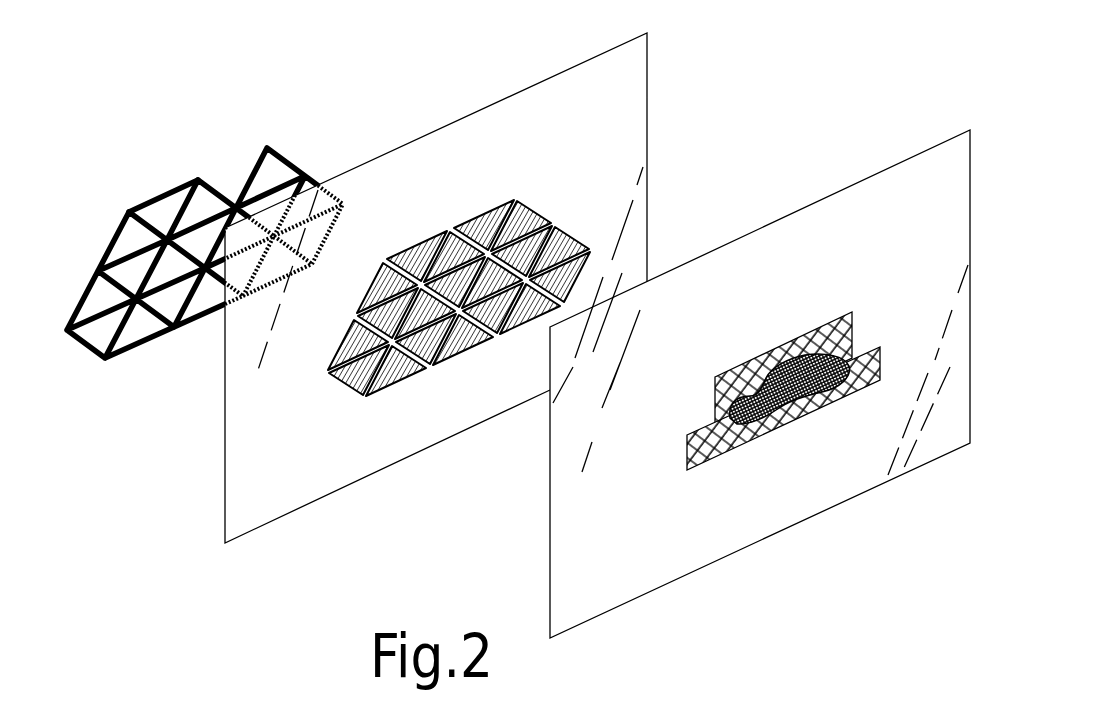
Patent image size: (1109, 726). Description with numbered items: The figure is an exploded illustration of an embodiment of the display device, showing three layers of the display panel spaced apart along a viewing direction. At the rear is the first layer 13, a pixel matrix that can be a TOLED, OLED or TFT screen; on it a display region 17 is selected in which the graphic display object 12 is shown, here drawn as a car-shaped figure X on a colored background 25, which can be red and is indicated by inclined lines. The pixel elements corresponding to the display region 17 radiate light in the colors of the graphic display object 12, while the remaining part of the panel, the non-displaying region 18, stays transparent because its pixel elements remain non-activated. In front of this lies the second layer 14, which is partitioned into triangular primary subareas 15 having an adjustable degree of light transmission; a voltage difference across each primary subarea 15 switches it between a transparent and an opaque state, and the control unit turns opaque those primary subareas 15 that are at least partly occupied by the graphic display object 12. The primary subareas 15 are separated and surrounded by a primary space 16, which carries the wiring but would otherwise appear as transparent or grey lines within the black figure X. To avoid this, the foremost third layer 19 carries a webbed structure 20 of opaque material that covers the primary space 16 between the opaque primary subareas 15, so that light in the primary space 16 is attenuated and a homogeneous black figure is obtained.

The graphic display object 12 is at (722, 455).
The first layer 13 is at (903, 177).
The second layer 14 is at (633, 98).
The primary subareas 15 is at (417, 242).
The primary space 16 is at (494, 269).
The display region 17 is at (788, 436).
The non-displaying region 18 is at (586, 497).
The third layer 19 is at (250, 155).
The webbed structure 20 is at (205, 215).
The colored background 25 is at (863, 377).
The figure X is at (773, 427).